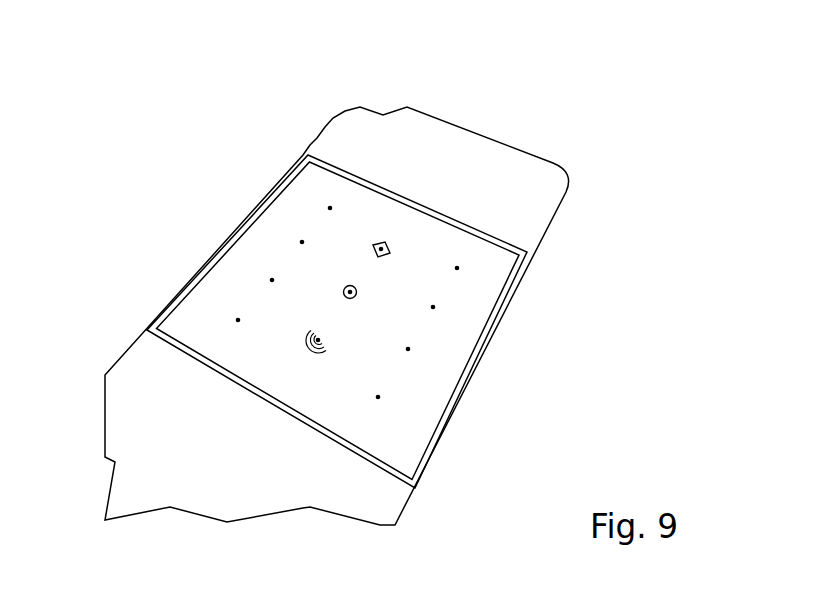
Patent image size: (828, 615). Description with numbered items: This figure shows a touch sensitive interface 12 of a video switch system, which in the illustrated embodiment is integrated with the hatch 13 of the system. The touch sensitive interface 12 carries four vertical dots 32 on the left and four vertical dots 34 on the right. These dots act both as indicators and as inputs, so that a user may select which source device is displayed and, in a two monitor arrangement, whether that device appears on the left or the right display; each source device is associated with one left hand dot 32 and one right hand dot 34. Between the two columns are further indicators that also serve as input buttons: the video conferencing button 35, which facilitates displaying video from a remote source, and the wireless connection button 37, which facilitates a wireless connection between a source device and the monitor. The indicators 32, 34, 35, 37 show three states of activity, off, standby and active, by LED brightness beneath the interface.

The hatch 13 is at (490, 105).
The touch sensitive interface 12 is at (463, 388).
The left hand dots 32 is at (330, 208).
The right hand dots 34 is at (457, 268).
The video conferencing button 35 is at (387, 245).
The wireless connection button 37 is at (322, 337).